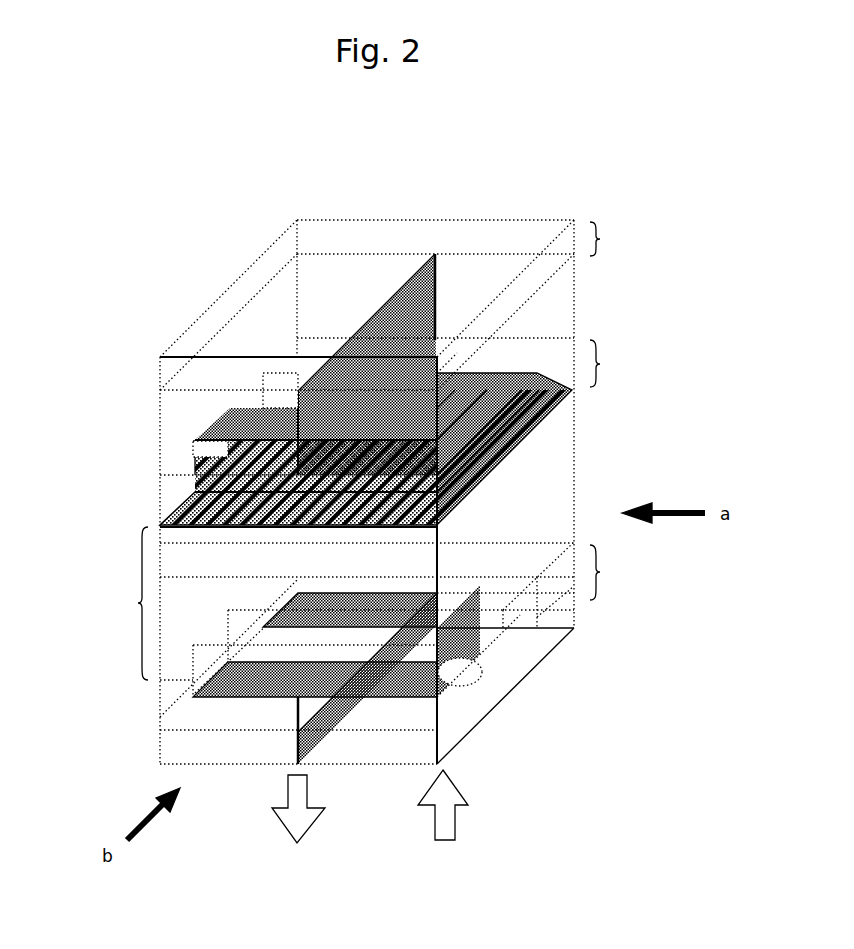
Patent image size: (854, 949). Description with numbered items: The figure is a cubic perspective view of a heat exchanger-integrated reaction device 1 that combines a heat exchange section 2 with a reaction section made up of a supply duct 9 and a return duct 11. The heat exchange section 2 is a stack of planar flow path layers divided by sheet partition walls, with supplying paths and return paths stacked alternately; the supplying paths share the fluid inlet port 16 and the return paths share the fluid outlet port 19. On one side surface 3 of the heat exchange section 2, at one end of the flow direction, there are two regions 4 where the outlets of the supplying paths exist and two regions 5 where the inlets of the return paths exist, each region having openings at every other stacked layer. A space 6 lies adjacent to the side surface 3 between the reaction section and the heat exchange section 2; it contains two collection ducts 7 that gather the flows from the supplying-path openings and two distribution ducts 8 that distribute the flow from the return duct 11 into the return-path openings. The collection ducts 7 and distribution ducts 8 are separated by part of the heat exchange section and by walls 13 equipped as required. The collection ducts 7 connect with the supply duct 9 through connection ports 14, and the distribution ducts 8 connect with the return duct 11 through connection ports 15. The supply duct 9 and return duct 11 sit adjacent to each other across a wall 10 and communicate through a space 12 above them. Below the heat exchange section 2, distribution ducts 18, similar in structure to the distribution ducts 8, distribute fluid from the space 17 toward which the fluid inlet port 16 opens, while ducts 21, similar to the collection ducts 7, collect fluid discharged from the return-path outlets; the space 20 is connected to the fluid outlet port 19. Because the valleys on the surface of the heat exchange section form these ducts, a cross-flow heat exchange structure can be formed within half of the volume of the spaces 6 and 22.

The heat exchanger-integrated reaction device 1 is at (297, 220).
The heat exchange section 2 is at (336, 603).
The side surface of the heat exchange section 3 is at (205, 520).
The regions where the outlets of the supplying paths exist 4 is at (245, 445).
The regions where the inlets of the return paths exist 5 is at (265, 395).
The space 6 is at (532, 432).
The collection ducts 7 is at (465, 470).
The distribution ducts 8 is at (470, 445).
The supply duct 9 is at (262, 330).
The wall 10 is at (435, 254).
The return duct 11 is at (460, 300).
The space 12 is at (467, 239).
The walls 13 is at (465, 458).
The connection ports 14 is at (285, 392).
The connection ports 15 is at (520, 385).
The fluid inlet port 16 is at (470, 697).
The space 17 is at (383, 748).
The distribution ducts 18 is at (487, 653).
The fluid outlet port 19 is at (285, 695).
The space 20 is at (230, 747).
The ducts 21 is at (253, 603).
The space 22 is at (536, 577).